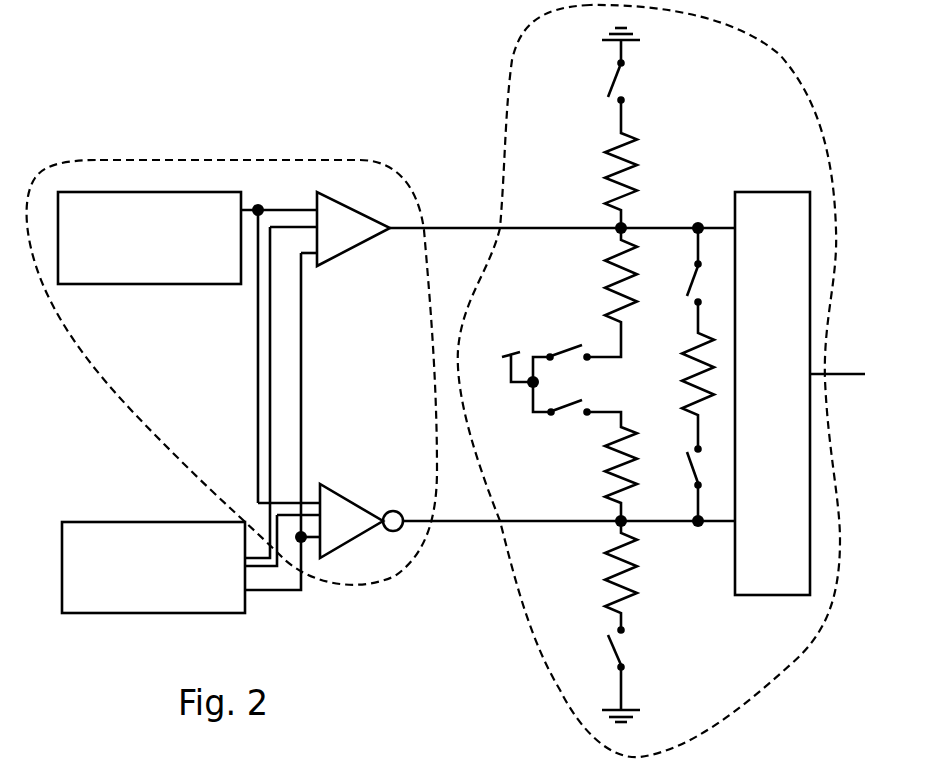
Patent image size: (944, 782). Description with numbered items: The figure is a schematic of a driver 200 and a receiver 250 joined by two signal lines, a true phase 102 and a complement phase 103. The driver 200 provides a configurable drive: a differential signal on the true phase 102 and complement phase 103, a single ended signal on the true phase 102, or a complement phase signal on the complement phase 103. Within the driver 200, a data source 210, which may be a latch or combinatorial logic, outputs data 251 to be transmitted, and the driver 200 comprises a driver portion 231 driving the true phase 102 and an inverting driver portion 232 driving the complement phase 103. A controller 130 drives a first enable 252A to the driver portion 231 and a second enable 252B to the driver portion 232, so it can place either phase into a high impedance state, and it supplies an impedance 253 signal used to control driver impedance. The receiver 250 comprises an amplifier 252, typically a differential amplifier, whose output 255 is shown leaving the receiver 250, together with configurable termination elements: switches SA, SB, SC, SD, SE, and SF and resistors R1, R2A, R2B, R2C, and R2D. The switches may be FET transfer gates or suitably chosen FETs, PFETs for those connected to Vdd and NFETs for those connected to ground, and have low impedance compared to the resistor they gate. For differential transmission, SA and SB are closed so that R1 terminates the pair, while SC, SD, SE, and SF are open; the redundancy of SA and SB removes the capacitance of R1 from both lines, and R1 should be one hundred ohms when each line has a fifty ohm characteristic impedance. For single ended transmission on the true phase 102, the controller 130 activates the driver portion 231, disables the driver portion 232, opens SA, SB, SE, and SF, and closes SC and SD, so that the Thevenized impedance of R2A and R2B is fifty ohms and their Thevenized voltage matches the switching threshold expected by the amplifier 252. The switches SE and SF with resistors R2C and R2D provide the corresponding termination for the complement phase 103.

The driver 200 is at (255, 163).
The data source 210 is at (170, 264).
The controller 130 is at (175, 592).
The driver portion 231 is at (360, 242).
The driver portion 232 is at (368, 532).
The data 251 is at (258, 382).
The enable 252A is at (270, 432).
The enable 252B is at (283, 515).
The impedance 253 is at (301, 340).
The true phase 102 is at (483, 228).
The complement phase 103 is at (492, 523).
The receiver 250 is at (520, 66).
The amplifier 252 is at (792, 417).
The output 255 is at (838, 378).
The switch SC is at (594, 82).
The switch SD is at (566, 341).
The switch SE is at (569, 420).
The switch SF is at (635, 649).
The switch SA is at (710, 266).
The switch SB is at (711, 484).
The resistor R1 is at (684, 375).
The resistor R2A is at (647, 164).
The resistor R2B is at (595, 292).
The resistor R2C is at (598, 466).
The resistor R2D is at (646, 575).
The supply voltage Vdd is at (519, 367).